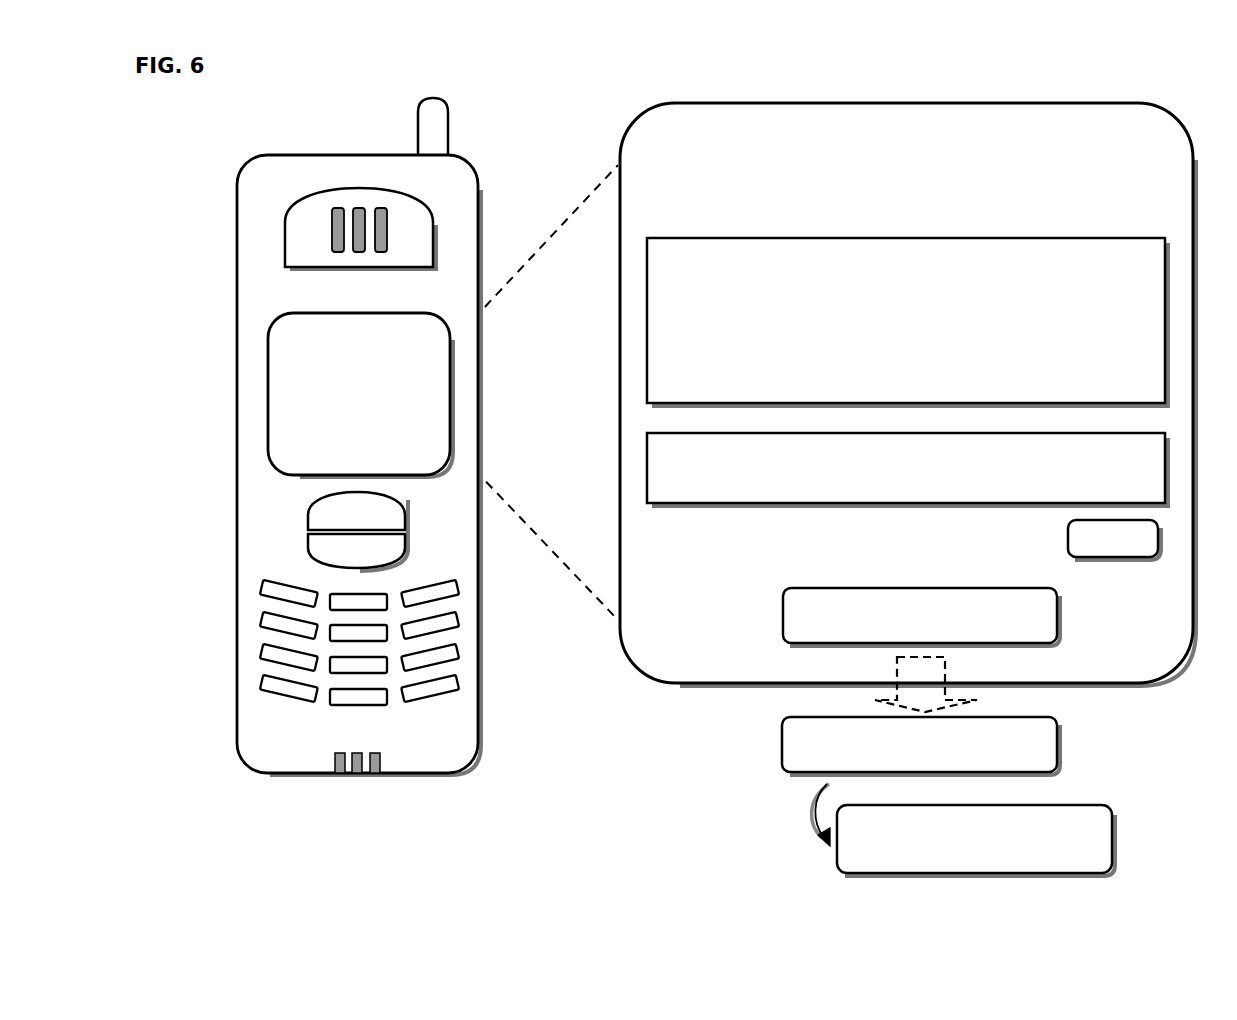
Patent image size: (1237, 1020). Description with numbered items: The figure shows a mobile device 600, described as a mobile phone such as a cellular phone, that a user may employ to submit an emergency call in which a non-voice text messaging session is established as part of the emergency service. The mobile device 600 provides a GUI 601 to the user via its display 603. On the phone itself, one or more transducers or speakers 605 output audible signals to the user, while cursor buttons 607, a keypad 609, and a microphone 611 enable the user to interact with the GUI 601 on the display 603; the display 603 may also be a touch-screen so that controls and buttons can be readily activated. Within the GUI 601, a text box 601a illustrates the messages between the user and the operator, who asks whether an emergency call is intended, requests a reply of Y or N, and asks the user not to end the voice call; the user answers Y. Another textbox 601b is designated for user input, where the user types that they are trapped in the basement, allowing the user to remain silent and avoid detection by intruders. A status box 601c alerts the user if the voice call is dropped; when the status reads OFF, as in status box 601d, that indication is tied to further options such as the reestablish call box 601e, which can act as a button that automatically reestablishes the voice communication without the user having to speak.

The mobile device 600 is at (339, 469).
The GUI 601 is at (857, 480).
The text box 601a is at (647, 347).
The textbox 601b is at (647, 457).
The status box 601c is at (783, 620).
The status box 601d is at (782, 755).
The reestablish call box 601e is at (837, 850).
The display 603 is at (268, 368).
The transducers 605 is at (296, 234).
The cursor buttons 607 is at (305, 518).
The keypad 609 is at (227, 572).
The microphone 611 is at (330, 760).